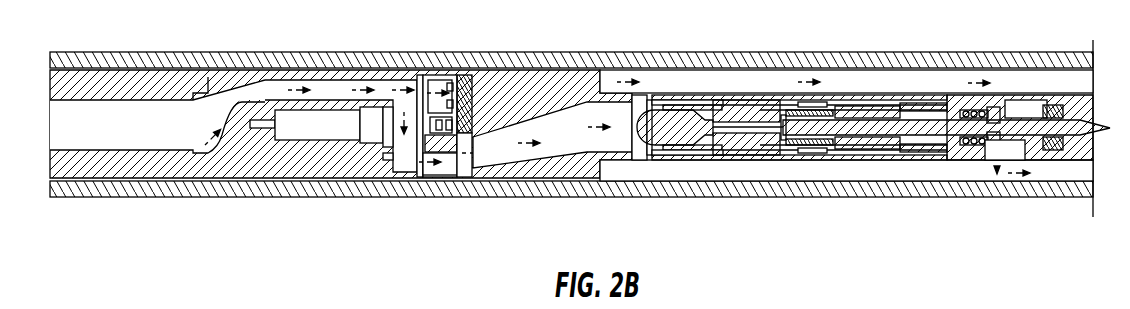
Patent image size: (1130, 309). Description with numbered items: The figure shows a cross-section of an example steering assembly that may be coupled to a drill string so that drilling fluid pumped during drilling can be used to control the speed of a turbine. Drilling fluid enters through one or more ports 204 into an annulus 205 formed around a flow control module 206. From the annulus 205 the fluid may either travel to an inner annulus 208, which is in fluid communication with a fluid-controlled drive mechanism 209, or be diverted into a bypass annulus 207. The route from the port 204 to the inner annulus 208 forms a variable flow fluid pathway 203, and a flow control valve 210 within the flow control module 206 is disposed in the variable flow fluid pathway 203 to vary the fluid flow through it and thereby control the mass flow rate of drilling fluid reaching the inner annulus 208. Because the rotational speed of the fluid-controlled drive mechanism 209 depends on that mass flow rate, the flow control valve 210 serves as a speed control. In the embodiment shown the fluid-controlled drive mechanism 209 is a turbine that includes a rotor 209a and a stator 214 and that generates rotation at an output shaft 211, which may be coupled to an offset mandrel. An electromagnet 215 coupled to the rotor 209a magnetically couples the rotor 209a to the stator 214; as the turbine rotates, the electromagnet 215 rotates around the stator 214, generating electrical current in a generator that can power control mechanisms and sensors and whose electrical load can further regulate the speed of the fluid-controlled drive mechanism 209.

The variable flow fluid pathway 203 is at (442, 167).
The port 204 is at (238, 97).
The annulus 205 is at (327, 88).
The flow control module 206 is at (305, 127).
The bypass annulus 207 is at (436, 90).
The inner annulus 208 is at (560, 143).
The fluid-controlled drive mechanism 209 is at (742, 100).
The rotor 209a is at (868, 155).
The flow control valve 210 is at (463, 176).
The output shaft 211 is at (1027, 112).
The stator 214 is at (750, 153).
The electromagnet 215 is at (723, 153).